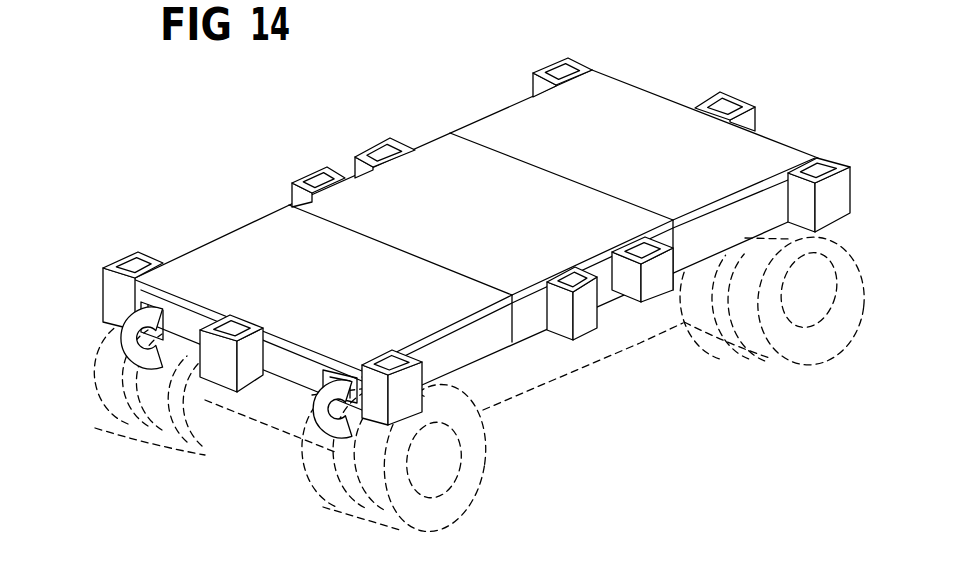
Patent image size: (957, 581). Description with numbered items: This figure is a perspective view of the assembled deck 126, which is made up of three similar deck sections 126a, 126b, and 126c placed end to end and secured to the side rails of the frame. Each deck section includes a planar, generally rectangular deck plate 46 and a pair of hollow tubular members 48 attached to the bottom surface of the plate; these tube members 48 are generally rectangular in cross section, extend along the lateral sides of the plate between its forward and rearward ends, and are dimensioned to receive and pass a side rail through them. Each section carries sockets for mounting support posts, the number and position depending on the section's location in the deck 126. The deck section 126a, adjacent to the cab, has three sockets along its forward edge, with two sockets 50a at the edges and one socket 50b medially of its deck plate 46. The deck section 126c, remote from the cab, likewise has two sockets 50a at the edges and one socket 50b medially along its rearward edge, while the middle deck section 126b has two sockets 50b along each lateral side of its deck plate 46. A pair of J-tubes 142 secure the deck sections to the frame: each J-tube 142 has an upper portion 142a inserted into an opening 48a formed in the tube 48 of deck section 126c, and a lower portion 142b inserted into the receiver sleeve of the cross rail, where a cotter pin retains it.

The deck 126 is at (828, 113).
The deck section 126a is at (606, 100).
The deck section 126b is at (438, 151).
The deck section 126c is at (222, 246).
The deck plate 46 is at (683, 120).
The hollow tubular member 48 is at (753, 223).
The opening 48a is at (143, 302).
The socket 50a is at (548, 70).
The socket 50b is at (737, 102).
The J-tube 142 is at (120, 374).
The upper portion 142a is at (317, 381).
The lower portion 142b is at (160, 360).